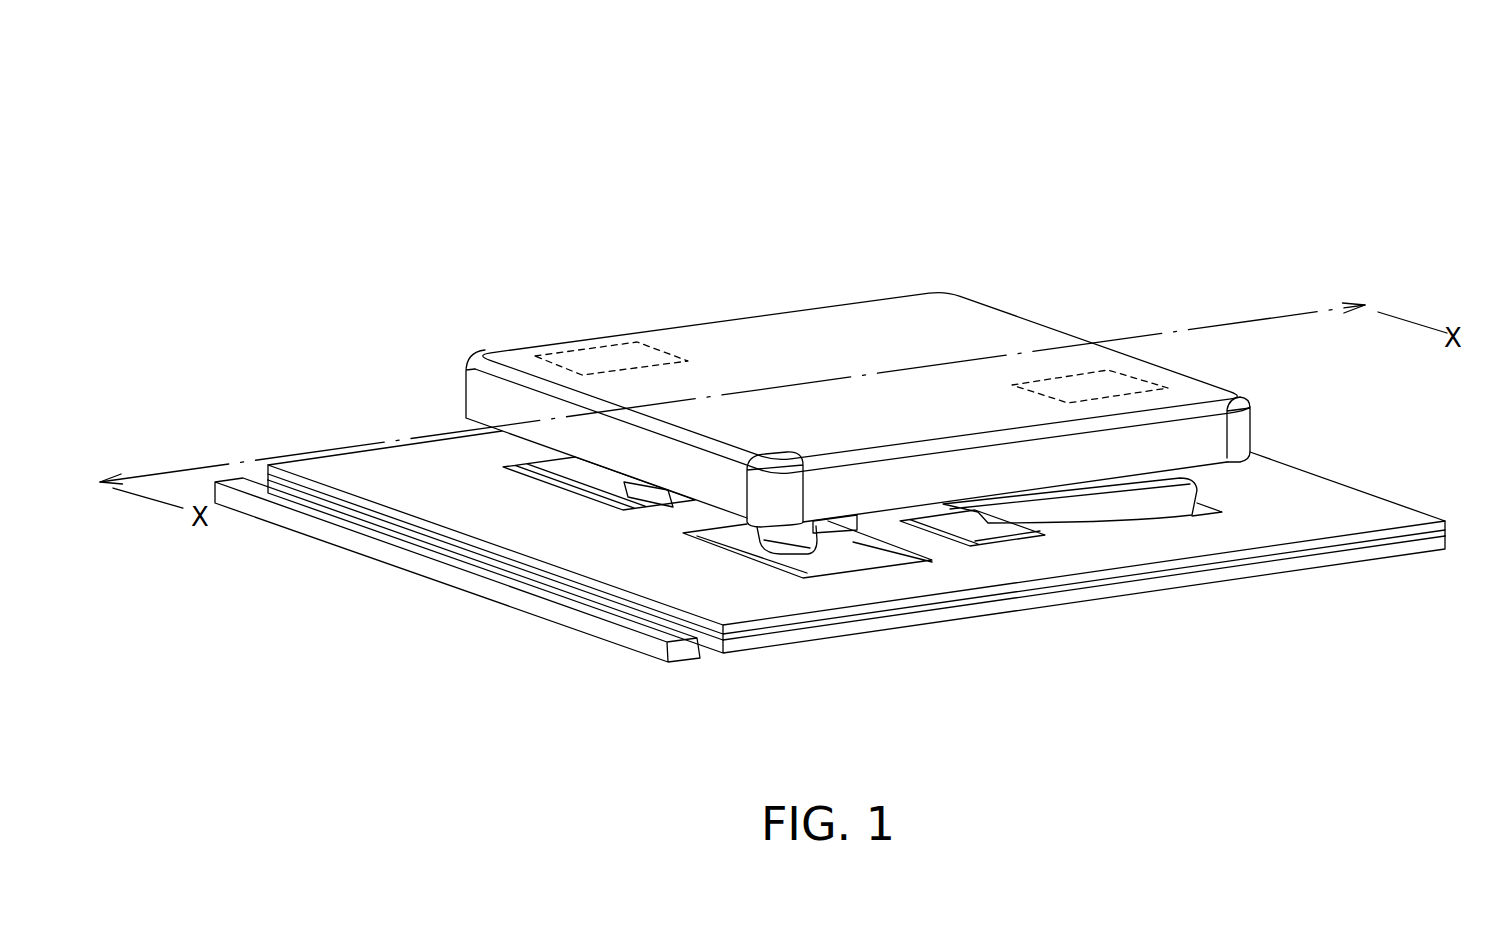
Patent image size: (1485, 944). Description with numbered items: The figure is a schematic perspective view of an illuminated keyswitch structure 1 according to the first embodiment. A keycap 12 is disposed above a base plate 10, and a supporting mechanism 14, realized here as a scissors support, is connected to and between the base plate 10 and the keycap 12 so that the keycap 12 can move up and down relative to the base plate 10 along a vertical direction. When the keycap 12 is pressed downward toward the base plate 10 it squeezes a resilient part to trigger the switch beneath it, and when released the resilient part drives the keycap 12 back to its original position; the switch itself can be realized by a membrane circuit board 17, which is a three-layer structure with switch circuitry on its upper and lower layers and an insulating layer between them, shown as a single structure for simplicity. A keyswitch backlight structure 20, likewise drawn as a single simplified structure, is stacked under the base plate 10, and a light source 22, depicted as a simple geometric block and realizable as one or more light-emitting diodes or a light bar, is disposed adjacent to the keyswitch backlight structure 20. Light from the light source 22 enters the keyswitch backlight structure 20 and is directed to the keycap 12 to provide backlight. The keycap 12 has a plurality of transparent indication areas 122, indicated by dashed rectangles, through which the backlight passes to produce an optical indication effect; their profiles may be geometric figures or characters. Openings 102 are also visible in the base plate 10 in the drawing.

The illuminated keyswitch structure 1 is at (1088, 125).
The keycap 12 is at (903, 301).
The transparent indication areas 122 is at (597, 346).
The membrane circuit board 17 is at (1336, 499).
The base plate 10 is at (1275, 558).
The keyswitch backlight structure 20 is at (1391, 554).
The light source 22 is at (436, 572).
The openings 102 is at (845, 563).
The supporting mechanism 14 is at (1033, 518).